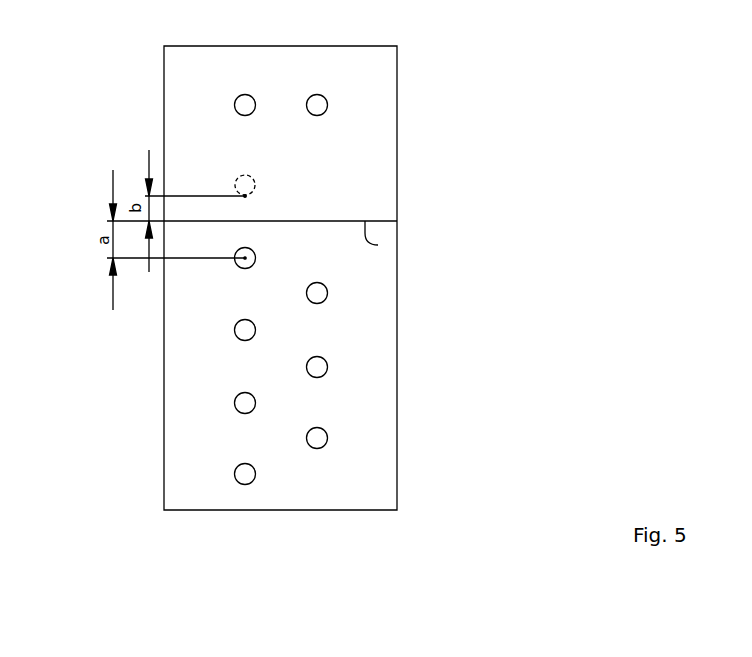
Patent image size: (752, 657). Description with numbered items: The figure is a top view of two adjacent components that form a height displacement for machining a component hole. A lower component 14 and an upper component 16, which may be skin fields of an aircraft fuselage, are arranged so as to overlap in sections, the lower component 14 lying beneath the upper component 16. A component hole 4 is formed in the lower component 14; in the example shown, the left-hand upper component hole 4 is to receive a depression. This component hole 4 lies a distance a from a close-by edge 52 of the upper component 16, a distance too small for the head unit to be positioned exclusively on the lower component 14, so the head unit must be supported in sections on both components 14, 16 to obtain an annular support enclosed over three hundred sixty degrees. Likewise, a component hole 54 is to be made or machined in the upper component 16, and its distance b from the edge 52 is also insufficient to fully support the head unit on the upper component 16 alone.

The upper component 16 is at (180, 73).
The lower component 14 is at (183, 487).
The component hole 54 is at (241, 181).
The component hole 4 is at (245, 258).
The edge 52 is at (378, 245).